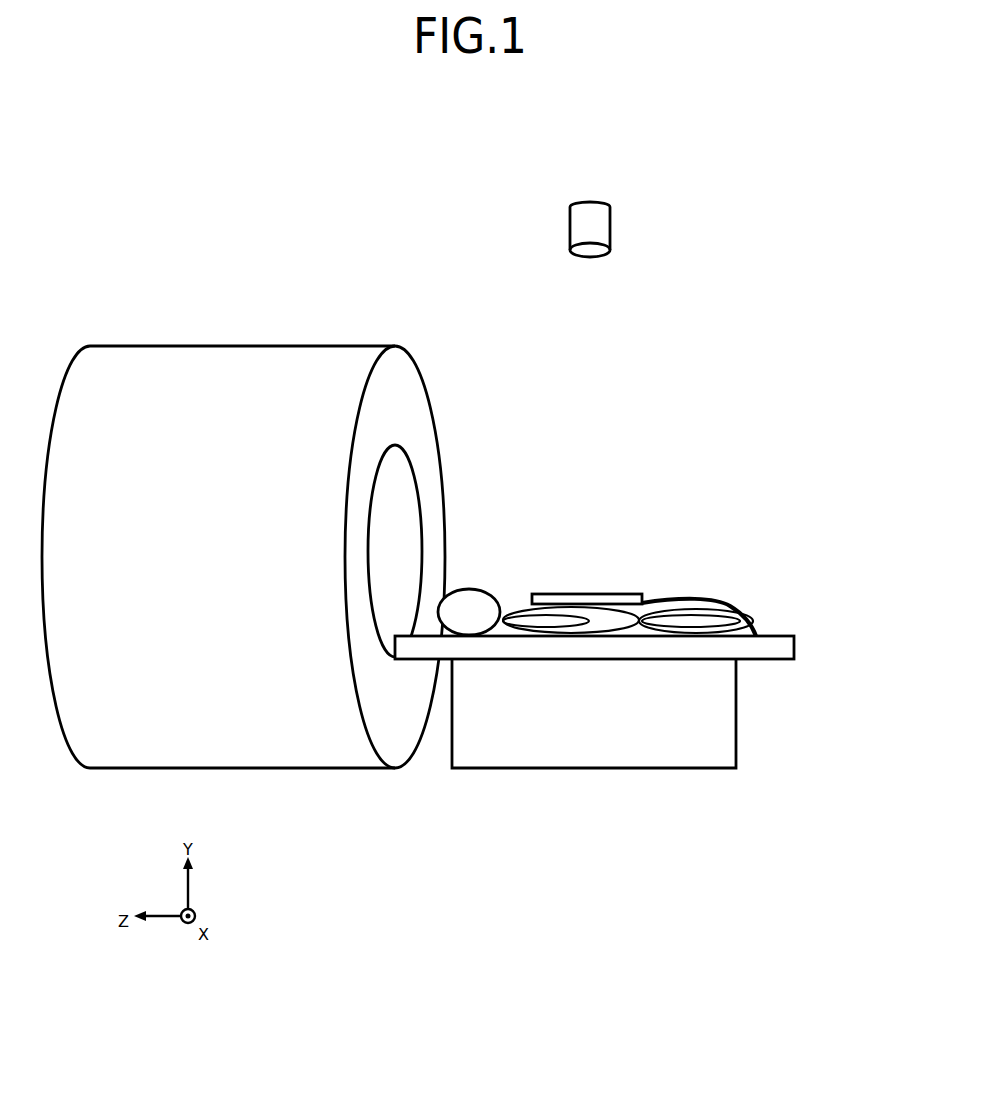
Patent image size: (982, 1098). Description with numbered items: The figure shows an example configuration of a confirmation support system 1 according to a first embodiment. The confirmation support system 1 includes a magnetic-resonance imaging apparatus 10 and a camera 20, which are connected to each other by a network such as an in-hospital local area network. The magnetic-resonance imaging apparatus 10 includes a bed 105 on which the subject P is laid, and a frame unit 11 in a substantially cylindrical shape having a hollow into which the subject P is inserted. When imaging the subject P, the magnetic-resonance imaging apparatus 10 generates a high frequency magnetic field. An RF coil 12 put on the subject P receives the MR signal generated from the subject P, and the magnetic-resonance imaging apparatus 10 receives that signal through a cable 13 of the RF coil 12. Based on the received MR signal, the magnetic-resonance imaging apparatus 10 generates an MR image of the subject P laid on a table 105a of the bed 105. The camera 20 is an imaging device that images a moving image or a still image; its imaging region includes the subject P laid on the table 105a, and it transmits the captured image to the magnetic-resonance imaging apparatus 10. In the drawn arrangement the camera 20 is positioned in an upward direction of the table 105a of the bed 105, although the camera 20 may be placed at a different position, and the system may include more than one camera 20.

The confirmation support system 1 is at (630, 150).
The magnetic-resonance imaging apparatus 10 is at (342, 314).
The frame unit 11 is at (188, 346).
The RF coil 12 is at (588, 594).
The cable 13 is at (718, 600).
The camera 20 is at (611, 225).
The subject P is at (470, 589).
The bed 105 is at (736, 710).
The table 105a is at (794, 648).